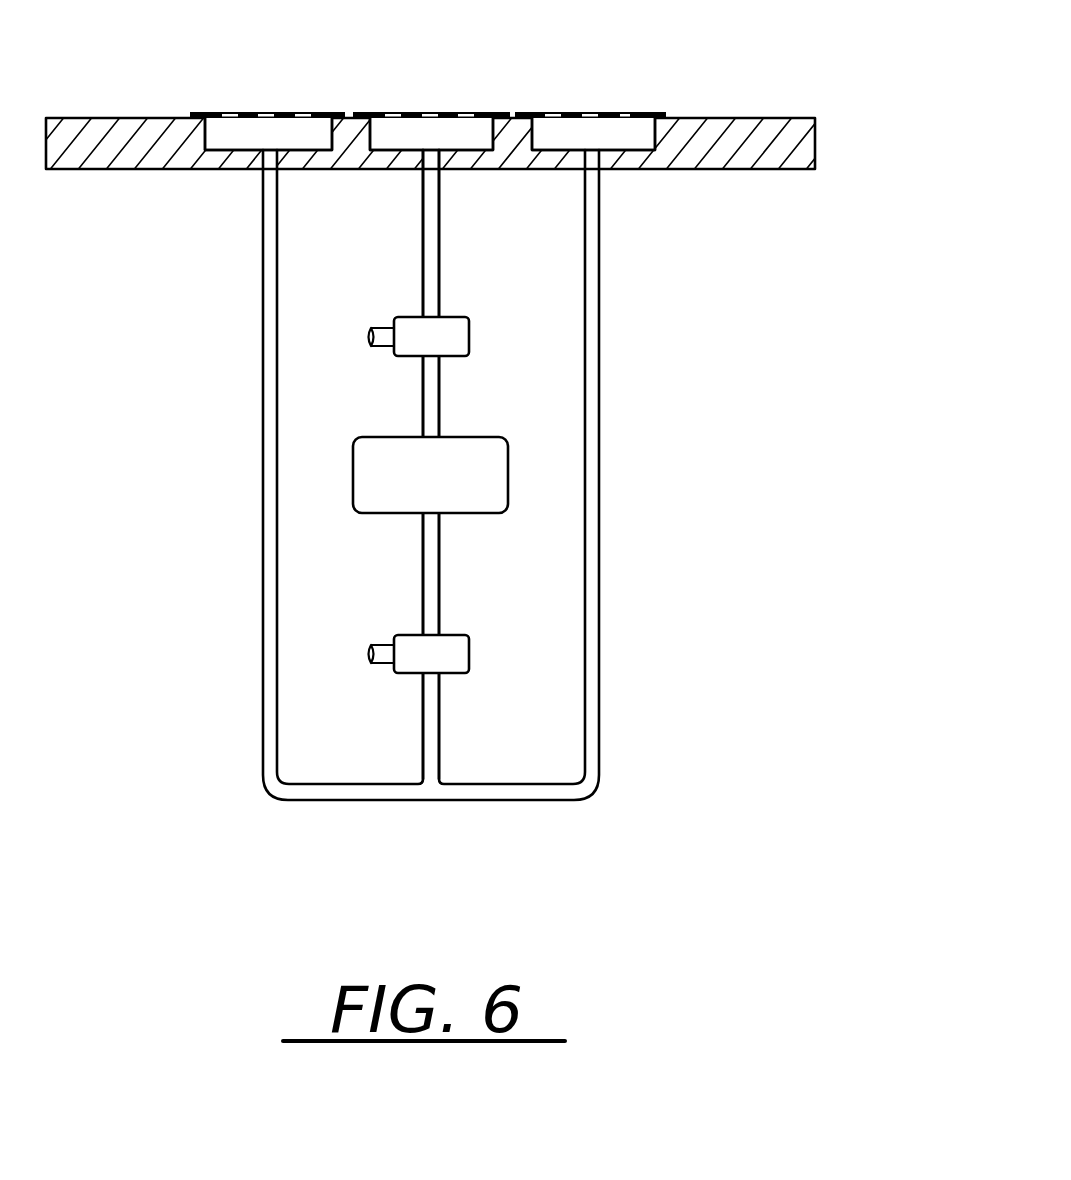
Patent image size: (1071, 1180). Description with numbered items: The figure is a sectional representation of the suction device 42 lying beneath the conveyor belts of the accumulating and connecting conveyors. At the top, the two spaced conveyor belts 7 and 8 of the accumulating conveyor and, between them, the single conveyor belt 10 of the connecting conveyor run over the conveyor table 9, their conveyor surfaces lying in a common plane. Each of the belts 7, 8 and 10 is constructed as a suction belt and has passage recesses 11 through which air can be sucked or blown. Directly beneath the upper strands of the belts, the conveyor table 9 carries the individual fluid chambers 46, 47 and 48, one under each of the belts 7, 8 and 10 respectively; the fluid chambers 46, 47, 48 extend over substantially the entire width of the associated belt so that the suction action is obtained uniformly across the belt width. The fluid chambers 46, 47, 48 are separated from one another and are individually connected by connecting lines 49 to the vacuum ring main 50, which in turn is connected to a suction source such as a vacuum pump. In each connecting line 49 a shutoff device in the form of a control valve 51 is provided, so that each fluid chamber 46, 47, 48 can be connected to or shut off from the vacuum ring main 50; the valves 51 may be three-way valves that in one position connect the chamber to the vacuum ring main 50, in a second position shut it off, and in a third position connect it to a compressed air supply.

The conveyor belt 7 is at (208, 112).
The conveyor belt 8 is at (668, 113).
The conveyor table 9 is at (790, 117).
The conveyor belt 10 is at (495, 112).
The passage recesses 11 is at (600, 112).
The suction device 42 is at (636, 622).
The fluid chamber 46 is at (237, 133).
The fluid chamber 47 is at (637, 133).
The fluid chamber 48 is at (380, 112).
The connecting line 49 is at (440, 252).
The vacuum ring main 50 is at (508, 468).
The control valve 51 is at (368, 338).